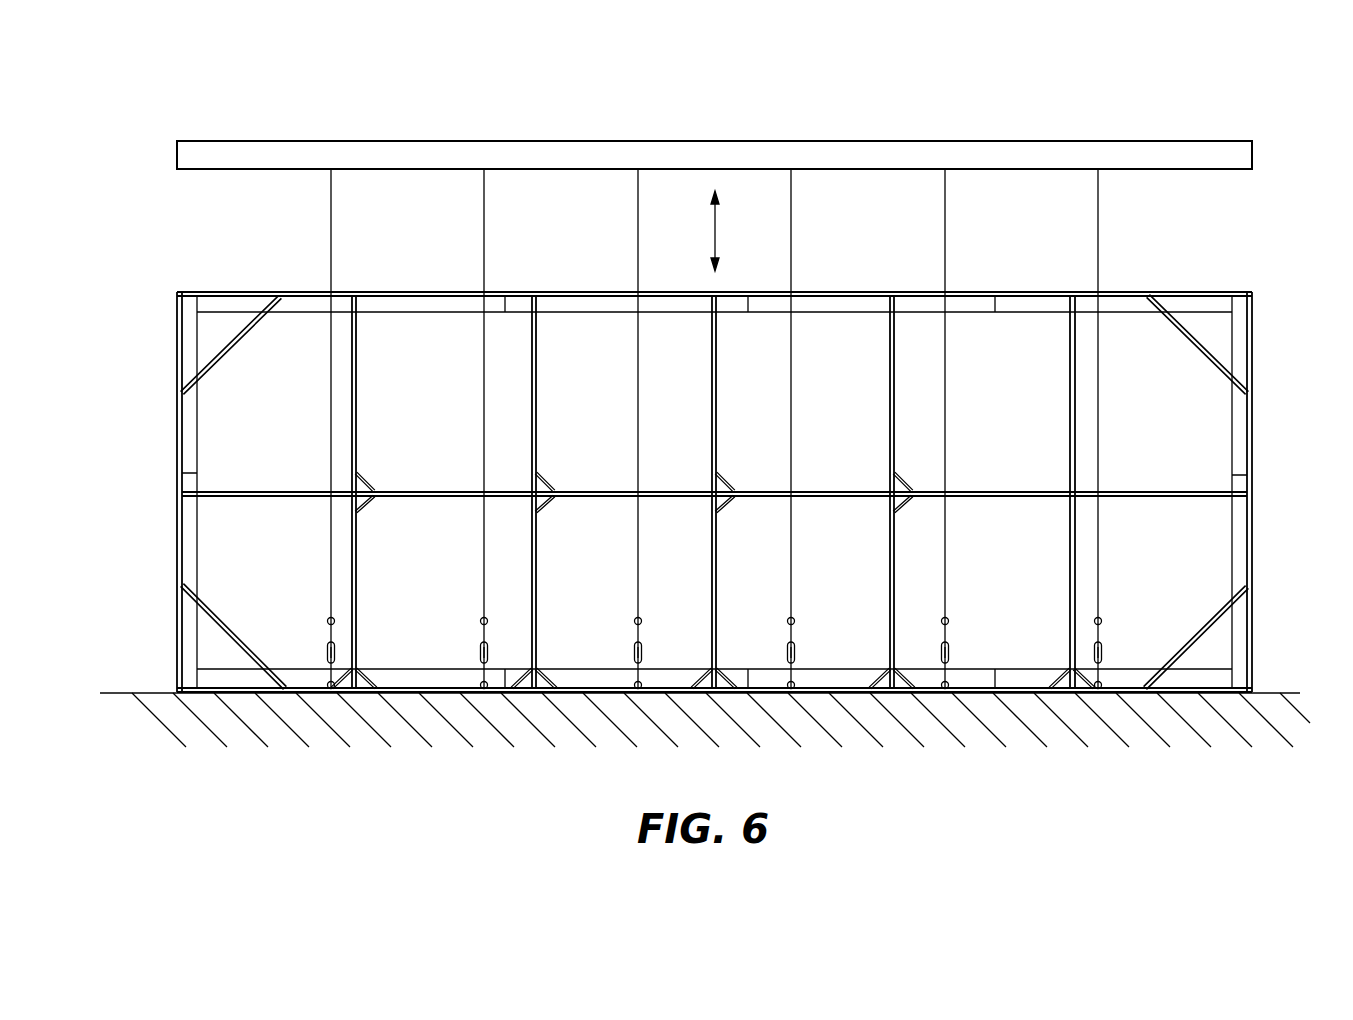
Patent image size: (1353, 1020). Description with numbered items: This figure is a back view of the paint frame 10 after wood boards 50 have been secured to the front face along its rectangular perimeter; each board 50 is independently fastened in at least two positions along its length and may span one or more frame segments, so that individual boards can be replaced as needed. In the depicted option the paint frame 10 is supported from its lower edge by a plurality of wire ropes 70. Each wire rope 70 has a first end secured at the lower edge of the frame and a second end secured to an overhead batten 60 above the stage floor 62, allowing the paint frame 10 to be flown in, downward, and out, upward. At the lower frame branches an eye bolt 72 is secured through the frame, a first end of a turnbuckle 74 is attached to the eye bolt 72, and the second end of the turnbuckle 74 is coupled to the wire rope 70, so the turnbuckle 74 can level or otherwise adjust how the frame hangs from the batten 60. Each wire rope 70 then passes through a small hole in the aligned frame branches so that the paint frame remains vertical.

The paint frame 10 is at (158, 207).
The wood board 50 is at (400, 302).
The overhead batten 60 is at (866, 141).
The stage floor 62 is at (130, 690).
The wire rope 70 is at (331, 416).
The eye bolt 72 is at (355, 671).
The turnbuckle 74 is at (327, 652).